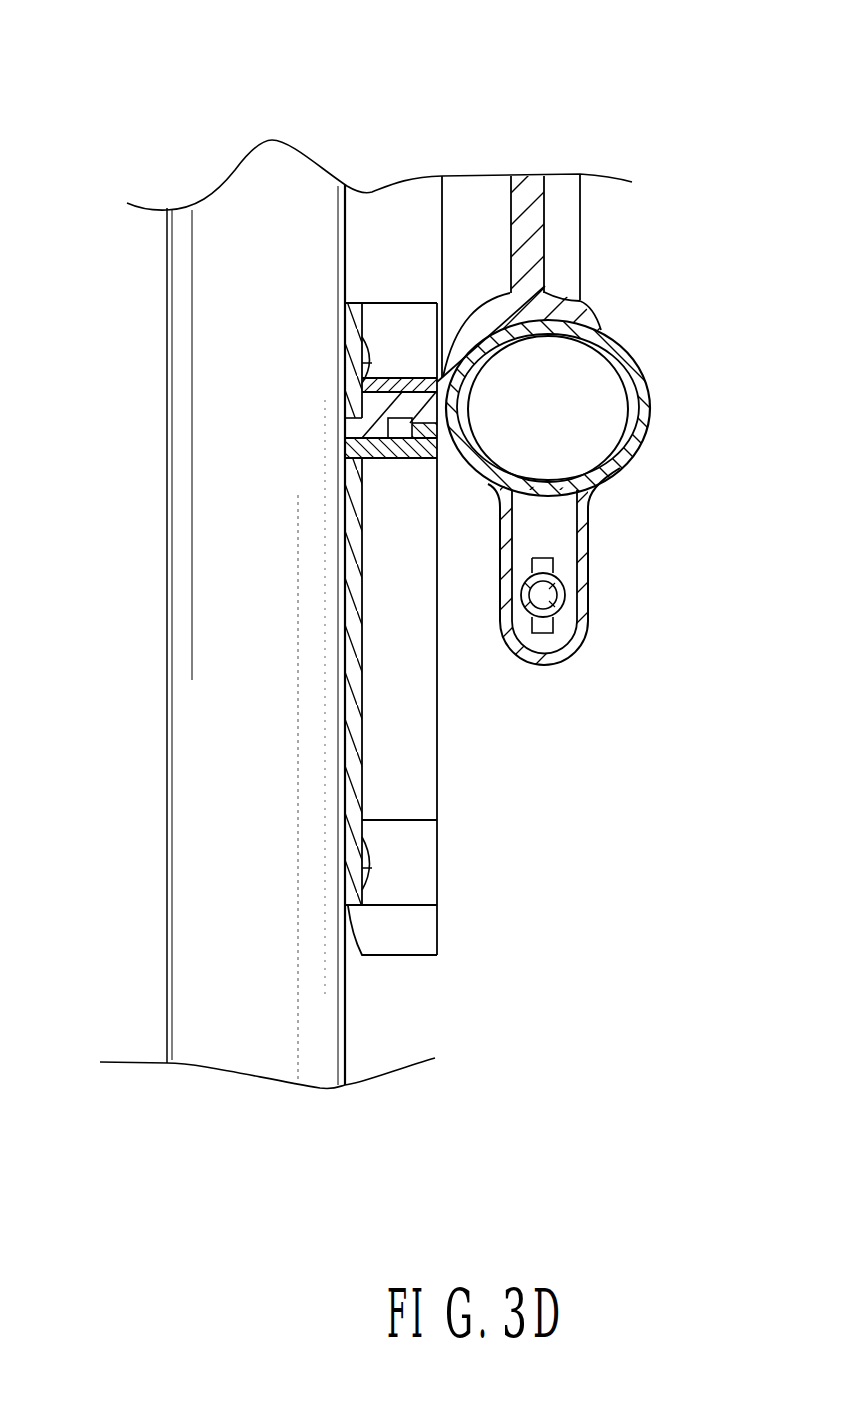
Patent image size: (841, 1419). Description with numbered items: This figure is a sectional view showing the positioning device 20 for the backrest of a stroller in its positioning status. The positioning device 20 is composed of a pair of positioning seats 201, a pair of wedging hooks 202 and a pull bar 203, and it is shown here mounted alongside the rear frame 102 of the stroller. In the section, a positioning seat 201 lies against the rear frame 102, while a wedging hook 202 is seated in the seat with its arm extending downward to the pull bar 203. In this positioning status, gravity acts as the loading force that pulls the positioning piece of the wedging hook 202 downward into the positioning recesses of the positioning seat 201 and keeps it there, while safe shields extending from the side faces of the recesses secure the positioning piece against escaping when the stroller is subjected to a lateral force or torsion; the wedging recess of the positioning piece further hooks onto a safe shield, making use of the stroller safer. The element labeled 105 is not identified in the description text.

The positioning device 20 is at (500, 106).
The rear frame 102 is at (233, 997).
The rod 105 is at (600, 428).
The positioning seat 201 is at (418, 775).
The wedging hook 202 is at (580, 300).
The pull bar 203 is at (585, 648).